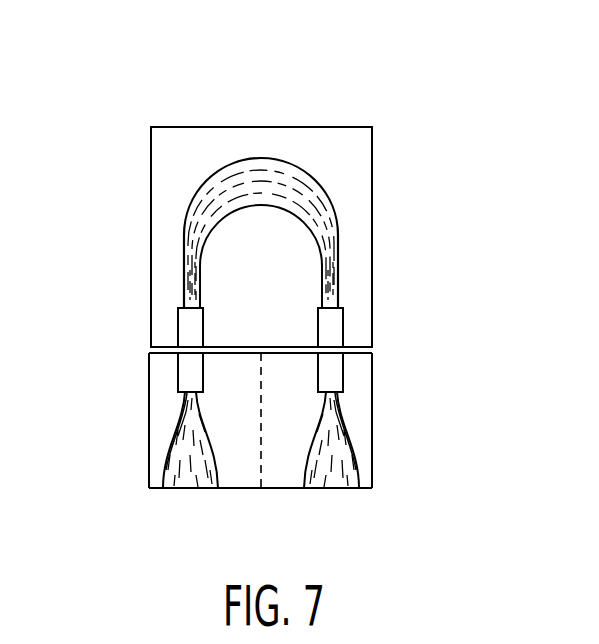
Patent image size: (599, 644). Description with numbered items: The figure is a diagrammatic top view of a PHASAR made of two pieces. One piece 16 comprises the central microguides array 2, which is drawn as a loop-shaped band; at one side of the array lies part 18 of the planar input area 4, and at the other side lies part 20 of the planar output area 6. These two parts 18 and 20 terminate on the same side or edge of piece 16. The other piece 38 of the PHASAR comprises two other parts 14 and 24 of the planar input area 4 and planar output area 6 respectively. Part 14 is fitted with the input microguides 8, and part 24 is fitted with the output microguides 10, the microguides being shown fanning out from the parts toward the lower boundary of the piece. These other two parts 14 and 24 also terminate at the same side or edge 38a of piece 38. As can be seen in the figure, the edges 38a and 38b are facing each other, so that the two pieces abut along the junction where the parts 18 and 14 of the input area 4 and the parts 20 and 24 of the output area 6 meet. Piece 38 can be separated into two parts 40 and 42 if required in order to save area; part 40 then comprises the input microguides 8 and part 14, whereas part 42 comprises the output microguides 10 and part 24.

The central microguides array 2 is at (322, 205).
The planar input area 4 is at (172, 305).
The planar output area 6 is at (346, 299).
The input microguides 8 is at (185, 476).
The output microguides 10 is at (350, 483).
The part of planar input area 14 is at (190, 372).
The piece 16 is at (356, 140).
The part of planar input area 18 is at (190, 330).
The part of planar output area 20 is at (334, 325).
The part of planar output area 24 is at (334, 375).
The piece 38 is at (142, 453).
The edge 38a is at (358, 350).
The edge 38b is at (233, 490).
The part 40 is at (160, 403).
The part 42 is at (362, 412).